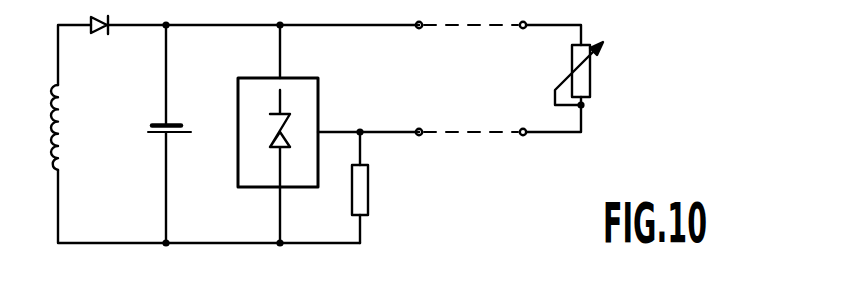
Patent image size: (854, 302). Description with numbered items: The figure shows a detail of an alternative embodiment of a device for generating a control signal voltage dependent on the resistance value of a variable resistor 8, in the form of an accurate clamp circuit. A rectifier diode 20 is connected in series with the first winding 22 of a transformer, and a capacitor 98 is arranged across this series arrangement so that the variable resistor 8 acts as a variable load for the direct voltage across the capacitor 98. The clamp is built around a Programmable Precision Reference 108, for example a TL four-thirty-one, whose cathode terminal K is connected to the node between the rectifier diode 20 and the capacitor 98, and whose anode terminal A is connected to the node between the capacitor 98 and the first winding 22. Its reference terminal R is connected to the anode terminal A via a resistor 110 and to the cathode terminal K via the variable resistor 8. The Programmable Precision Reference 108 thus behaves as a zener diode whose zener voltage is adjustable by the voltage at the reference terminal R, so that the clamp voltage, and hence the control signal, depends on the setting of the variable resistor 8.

The variable resistor 8 is at (574, 53).
The rectifier diode 20 is at (104, 33).
The first winding 22 is at (60, 127).
The capacitor 98 is at (193, 124).
The Programmable Precision Reference 108 is at (250, 173).
The resistor 110 is at (360, 196).